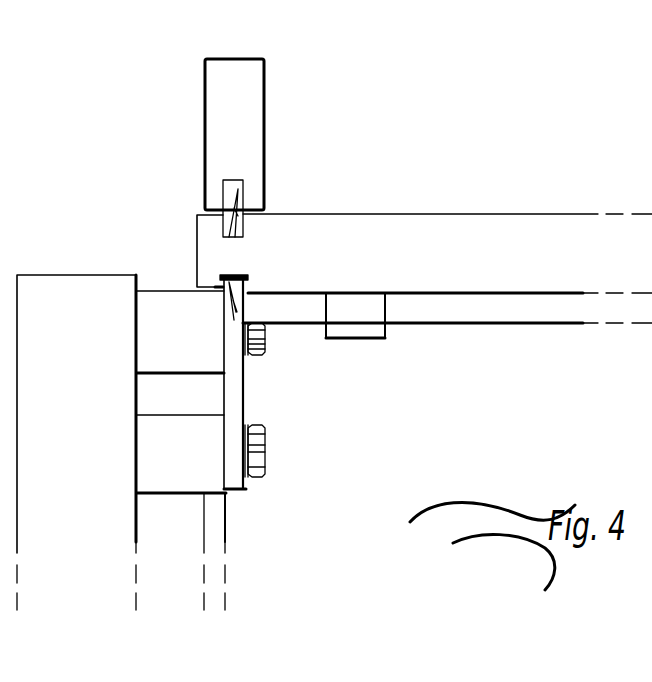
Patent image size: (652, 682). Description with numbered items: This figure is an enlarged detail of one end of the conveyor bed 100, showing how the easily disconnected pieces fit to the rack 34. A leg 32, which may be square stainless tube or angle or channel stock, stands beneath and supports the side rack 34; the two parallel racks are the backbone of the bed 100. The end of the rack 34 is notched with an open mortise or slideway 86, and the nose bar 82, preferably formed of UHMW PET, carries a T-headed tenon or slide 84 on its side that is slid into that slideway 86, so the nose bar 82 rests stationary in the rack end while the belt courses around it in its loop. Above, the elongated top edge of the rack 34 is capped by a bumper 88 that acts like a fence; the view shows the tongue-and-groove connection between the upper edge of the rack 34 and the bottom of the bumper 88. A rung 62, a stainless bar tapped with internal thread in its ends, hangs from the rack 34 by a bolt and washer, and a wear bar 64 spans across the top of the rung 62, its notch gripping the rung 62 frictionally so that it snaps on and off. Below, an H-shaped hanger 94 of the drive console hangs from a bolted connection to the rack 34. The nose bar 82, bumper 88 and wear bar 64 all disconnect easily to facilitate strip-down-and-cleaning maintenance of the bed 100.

The bed 100 is at (373, 104).
The bumper 88 is at (258, 103).
The T-headed slide 84 is at (196, 237).
The nose bar 82 is at (413, 225).
The leg 32 is at (73, 283).
The side rack 34 is at (237, 190).
The slideway 86 is at (243, 207).
The rung 62 is at (442, 313).
The wear bar 64 is at (363, 327).
The H-shaped hanger 94 is at (217, 507).